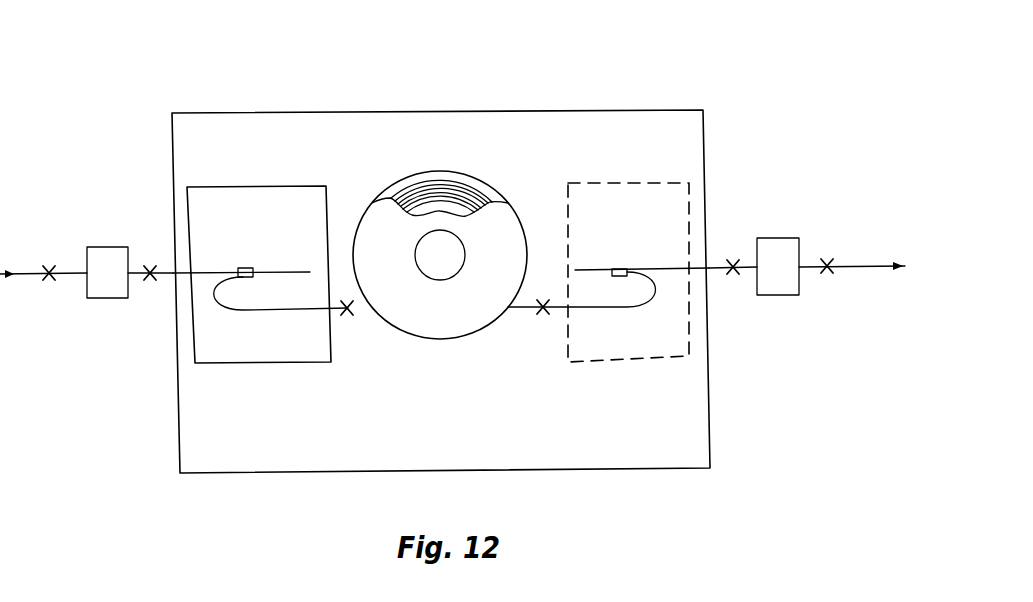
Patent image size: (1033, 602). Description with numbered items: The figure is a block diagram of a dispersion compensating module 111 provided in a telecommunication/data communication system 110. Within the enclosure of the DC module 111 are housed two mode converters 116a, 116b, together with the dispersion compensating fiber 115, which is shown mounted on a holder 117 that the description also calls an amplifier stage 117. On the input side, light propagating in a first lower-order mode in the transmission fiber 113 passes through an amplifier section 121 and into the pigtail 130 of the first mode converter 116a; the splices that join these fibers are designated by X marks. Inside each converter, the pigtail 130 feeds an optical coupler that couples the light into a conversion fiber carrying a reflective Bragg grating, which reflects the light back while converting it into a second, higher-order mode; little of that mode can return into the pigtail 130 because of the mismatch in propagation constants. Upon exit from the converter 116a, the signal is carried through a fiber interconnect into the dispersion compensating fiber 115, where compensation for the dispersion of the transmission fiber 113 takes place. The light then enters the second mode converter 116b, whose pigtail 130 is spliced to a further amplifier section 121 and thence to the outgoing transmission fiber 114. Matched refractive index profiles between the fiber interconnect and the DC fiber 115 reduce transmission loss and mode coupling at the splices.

The telecommunication/data communication system 110 is at (446, 242).
The dispersion compensating module 111 is at (455, 112).
The transmission fiber 113 is at (27, 272).
The transmission fiber 114 is at (850, 265).
The dispersion compensating fiber 115 is at (363, 310).
The mode converter 116a is at (260, 297).
The mode converter 116b is at (608, 296).
The amplifier stage 117 is at (446, 318).
The amplifier section 121 is at (103, 292).
The pigtail 130 is at (170, 278).